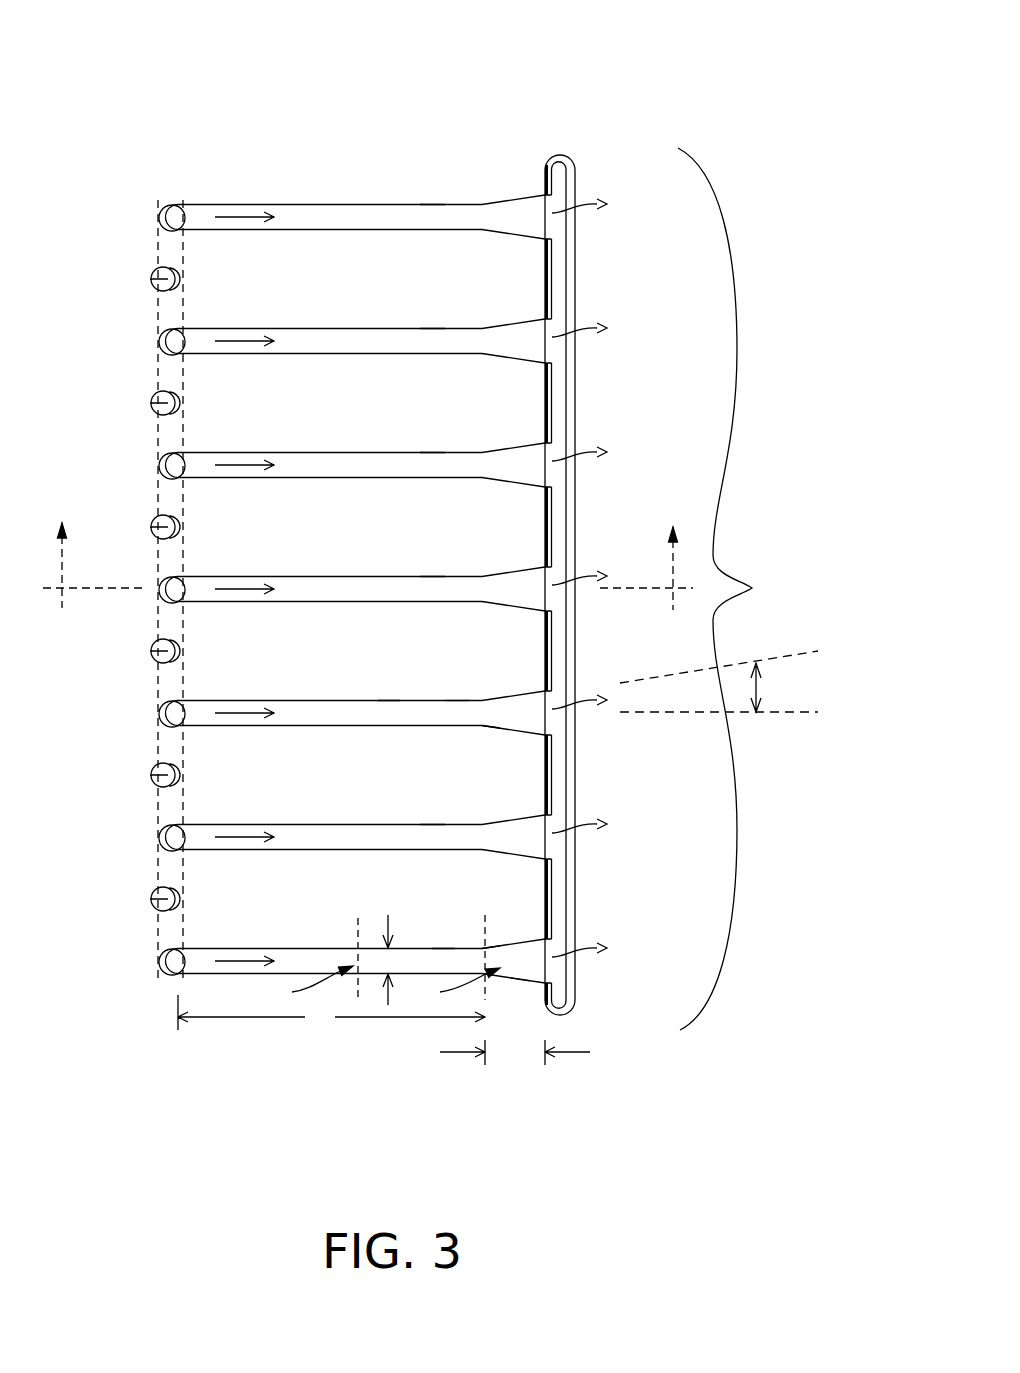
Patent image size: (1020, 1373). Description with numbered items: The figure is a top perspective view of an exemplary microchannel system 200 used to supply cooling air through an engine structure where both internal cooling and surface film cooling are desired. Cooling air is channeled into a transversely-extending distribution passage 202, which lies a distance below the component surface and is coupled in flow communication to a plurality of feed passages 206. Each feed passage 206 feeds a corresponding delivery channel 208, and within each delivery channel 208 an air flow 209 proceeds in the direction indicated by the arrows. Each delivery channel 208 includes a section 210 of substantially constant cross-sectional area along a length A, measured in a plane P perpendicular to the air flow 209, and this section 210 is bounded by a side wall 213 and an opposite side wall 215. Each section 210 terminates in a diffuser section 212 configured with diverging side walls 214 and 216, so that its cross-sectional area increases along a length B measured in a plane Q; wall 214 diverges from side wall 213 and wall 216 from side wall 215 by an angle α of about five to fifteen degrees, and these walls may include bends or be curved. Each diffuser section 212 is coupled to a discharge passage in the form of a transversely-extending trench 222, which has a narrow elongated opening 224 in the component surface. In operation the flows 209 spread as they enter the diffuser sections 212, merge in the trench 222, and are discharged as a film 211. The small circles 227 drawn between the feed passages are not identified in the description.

The microchannel system 200 is at (222, 96).
The distribution passage 202 is at (165, 561).
The feed passages 206 is at (166, 216).
The delivery channel 208 is at (340, 214).
The air flow 209 is at (245, 216).
The section 210 is at (432, 191).
The film 211 is at (678, 589).
The diffuser section 212 is at (522, 212).
The side wall 213 is at (455, 687).
The diverging side wall 214 is at (493, 933).
The opposite side wall 215 is at (489, 735).
The diverging side wall 216 is at (527, 991).
The trench 222 is at (577, 180).
The narrow elongated opening 224 is at (565, 228).
The secondary ports 227 is at (160, 279).